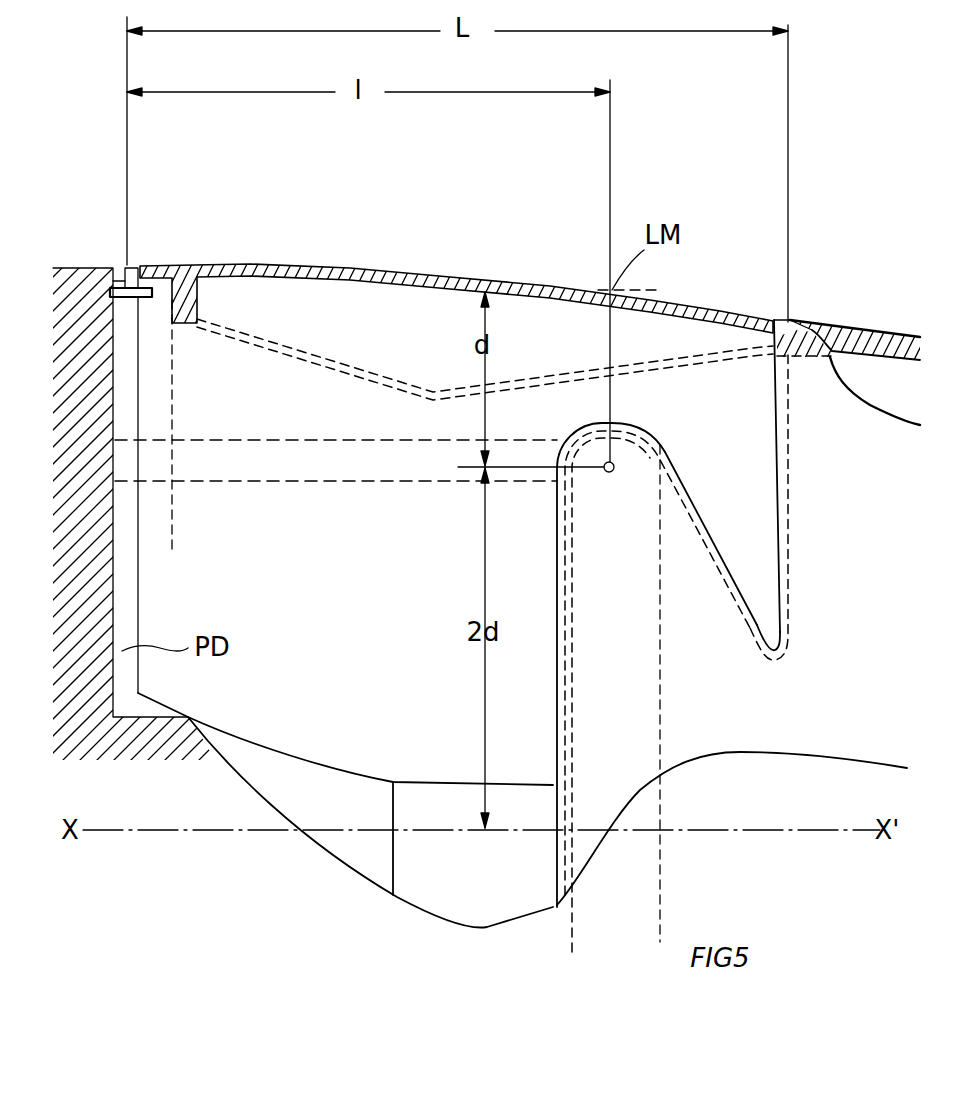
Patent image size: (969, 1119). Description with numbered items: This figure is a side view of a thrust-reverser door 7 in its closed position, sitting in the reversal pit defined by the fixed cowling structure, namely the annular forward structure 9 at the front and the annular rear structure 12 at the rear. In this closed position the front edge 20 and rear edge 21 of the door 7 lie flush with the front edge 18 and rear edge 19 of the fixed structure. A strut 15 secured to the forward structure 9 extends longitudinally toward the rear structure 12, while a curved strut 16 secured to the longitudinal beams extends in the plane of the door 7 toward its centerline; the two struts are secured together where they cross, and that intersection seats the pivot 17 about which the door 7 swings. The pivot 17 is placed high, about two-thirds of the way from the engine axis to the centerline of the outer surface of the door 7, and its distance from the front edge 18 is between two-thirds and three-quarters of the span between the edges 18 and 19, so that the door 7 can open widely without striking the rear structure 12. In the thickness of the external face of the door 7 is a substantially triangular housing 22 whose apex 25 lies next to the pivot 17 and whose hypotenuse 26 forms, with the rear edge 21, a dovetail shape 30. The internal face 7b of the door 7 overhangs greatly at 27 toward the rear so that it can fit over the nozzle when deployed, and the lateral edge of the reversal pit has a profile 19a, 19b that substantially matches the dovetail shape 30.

The pivoting door 7 is at (278, 258).
The internal face of the door 7b is at (748, 366).
The annular forward structure 9 is at (86, 278).
The annular rear structure 12 is at (883, 337).
The strut 15 is at (160, 458).
The curved strut 16 is at (660, 697).
The pivot 17 is at (611, 478).
The front edge of the fixed structure 18 is at (130, 266).
The rear edge of the fixed structure 19 is at (778, 330).
The lateral edge profile portion of the reversal pit 19a is at (783, 648).
The lateral edge profile portion of the reversal pit 19b is at (711, 543).
The front edge of the door 20 is at (137, 262).
The rear edge of the door 21 is at (773, 322).
The housing 22 is at (703, 489).
The apex of the triangular housing 25 is at (660, 432).
The hypotenuse of the triangular housing 26 is at (703, 593).
The overhang of the internal face 27 is at (872, 510).
The dovetail shape 30 is at (768, 632).